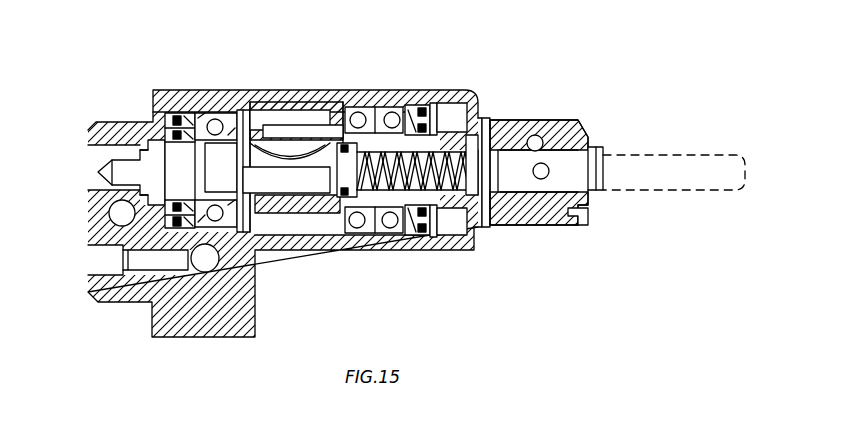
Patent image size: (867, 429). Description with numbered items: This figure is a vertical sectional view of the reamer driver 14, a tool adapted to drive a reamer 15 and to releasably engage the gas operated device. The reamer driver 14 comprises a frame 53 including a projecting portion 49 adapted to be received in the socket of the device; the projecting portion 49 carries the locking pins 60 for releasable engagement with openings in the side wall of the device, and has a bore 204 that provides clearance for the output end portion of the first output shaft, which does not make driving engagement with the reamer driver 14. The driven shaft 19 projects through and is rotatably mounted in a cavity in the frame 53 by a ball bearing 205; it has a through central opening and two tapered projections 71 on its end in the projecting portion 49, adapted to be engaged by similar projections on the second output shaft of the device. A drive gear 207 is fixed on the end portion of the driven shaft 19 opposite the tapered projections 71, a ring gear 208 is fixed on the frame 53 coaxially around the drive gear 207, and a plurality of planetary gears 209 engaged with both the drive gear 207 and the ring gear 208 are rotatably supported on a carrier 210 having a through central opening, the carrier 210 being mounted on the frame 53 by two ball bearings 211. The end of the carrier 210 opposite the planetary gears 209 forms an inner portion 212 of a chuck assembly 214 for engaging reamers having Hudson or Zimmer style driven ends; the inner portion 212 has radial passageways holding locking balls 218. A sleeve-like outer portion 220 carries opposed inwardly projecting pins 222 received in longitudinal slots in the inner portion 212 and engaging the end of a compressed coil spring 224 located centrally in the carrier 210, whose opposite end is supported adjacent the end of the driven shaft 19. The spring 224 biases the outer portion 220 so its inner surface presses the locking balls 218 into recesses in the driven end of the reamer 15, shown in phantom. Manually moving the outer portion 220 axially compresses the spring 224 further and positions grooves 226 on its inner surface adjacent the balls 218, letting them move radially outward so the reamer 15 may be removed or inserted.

The projecting portion 49 is at (108, 118).
The tapered projections 71 is at (104, 162).
The locking pins 60 is at (108, 210).
The bore 204 is at (100, 275).
The frame 53 is at (263, 314).
The driven shaft 19 is at (186, 152).
The ball bearing 205 is at (217, 124).
The drive gear 207 is at (262, 118).
The planetary gears 209 is at (292, 122).
The ring gear 208 is at (320, 110).
The ball bearings 211 is at (372, 116).
The reamer driver 14 is at (469, 88).
The compressed coil spring 224 is at (472, 140).
The locking balls 218 is at (547, 163).
The chuck assembly 214 is at (587, 125).
The reamer 15 is at (690, 155).
The grooves 226 is at (590, 208).
The pins 222 is at (489, 216).
The inner portion 212 is at (550, 208).
The sleeve-like outer portion 220 is at (531, 222).
The carrier 210 is at (443, 240).